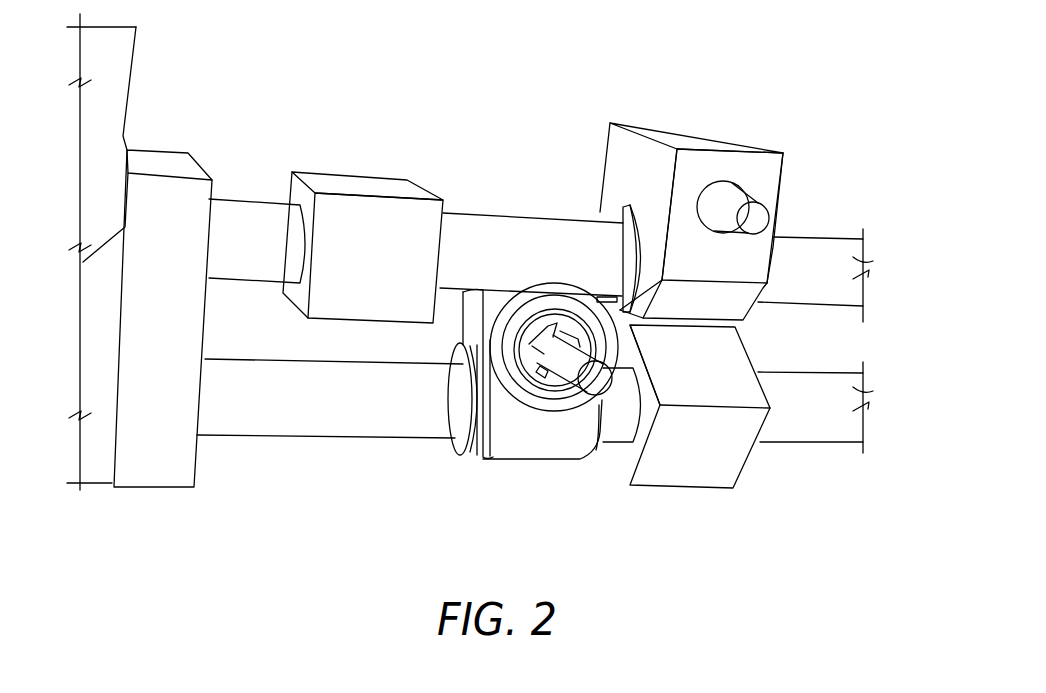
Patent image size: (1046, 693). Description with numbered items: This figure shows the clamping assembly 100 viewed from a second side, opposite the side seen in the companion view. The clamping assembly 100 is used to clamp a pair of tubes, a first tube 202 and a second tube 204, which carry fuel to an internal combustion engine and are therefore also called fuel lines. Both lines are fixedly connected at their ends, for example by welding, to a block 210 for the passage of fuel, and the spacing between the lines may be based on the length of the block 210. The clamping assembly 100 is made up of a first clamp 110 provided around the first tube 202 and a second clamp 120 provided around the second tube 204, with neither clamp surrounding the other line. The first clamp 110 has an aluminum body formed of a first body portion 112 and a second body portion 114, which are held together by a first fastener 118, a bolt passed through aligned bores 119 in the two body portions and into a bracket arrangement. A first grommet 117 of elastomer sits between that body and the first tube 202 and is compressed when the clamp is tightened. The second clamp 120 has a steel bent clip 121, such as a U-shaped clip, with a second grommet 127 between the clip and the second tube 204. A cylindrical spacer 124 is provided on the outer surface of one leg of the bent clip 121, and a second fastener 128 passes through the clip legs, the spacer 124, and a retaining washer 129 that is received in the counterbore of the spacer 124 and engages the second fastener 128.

The clamping assembly 100 is at (462, 128).
The first clamp 110 is at (766, 118).
The first body portion 112 is at (708, 135).
The second body portion 114 is at (633, 122).
The first grommet 117 is at (624, 215).
The first fastener 118 is at (760, 218).
The bores 119 is at (783, 153).
The second clamp 120 is at (589, 495).
The bent clip 121 is at (478, 457).
The spacer 124 is at (512, 372).
The second grommet 127 is at (448, 447).
The second fastener 128 is at (573, 358).
The retaining washer 129 is at (547, 380).
The first tube 202 is at (873, 261).
The second tube 204 is at (873, 391).
The block 210 is at (155, 473).